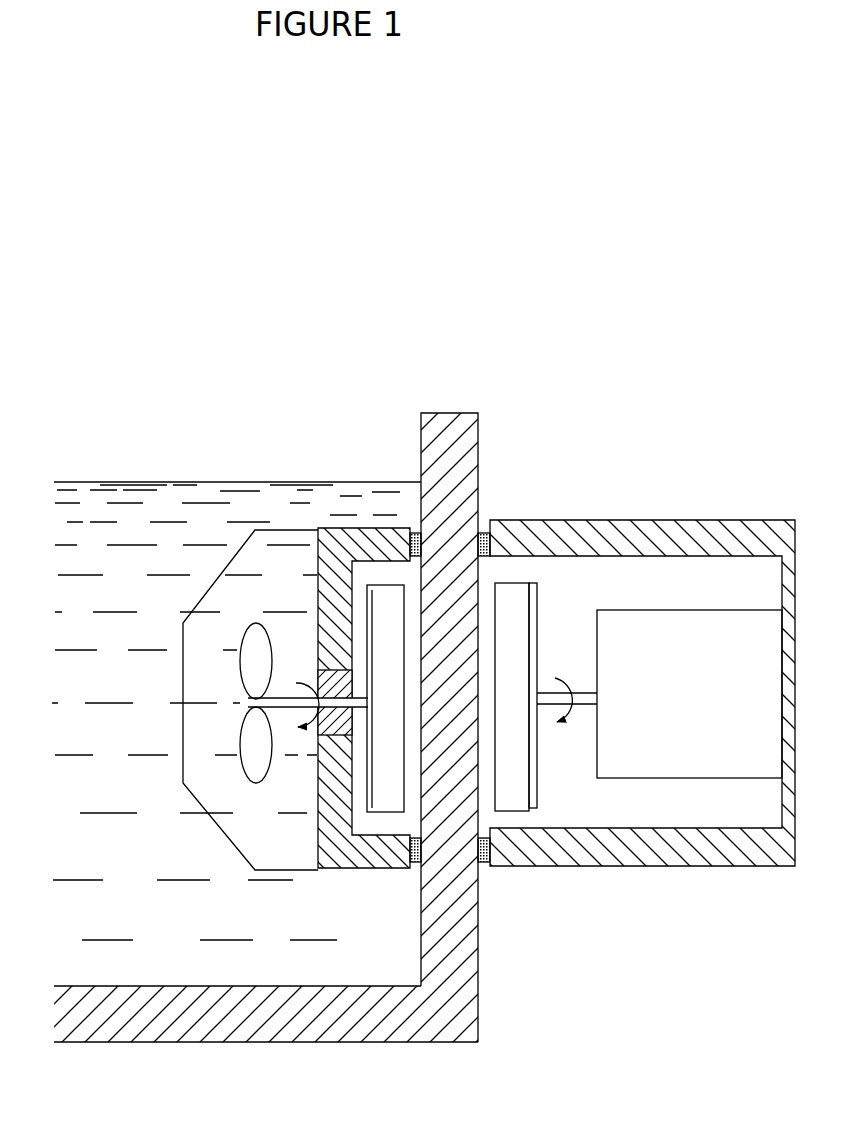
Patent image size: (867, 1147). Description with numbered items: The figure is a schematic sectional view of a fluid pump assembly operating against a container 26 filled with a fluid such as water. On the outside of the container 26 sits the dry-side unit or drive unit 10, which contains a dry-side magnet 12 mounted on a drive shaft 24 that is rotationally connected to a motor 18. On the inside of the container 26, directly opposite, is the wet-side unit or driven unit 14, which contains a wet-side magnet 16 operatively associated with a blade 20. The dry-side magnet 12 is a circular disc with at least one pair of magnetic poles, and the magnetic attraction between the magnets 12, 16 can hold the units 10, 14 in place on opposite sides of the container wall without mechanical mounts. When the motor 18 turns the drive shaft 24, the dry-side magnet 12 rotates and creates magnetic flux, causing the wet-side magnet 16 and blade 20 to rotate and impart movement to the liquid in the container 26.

The drive unit 10 is at (724, 497).
The dry-side magnet 12 is at (512, 600).
The driven unit 14 is at (302, 516).
The wet-side magnet 16 is at (393, 797).
The motor 18 is at (712, 747).
The blade 20 is at (255, 657).
The drive shaft 24 is at (565, 698).
The container 26 is at (300, 1030).